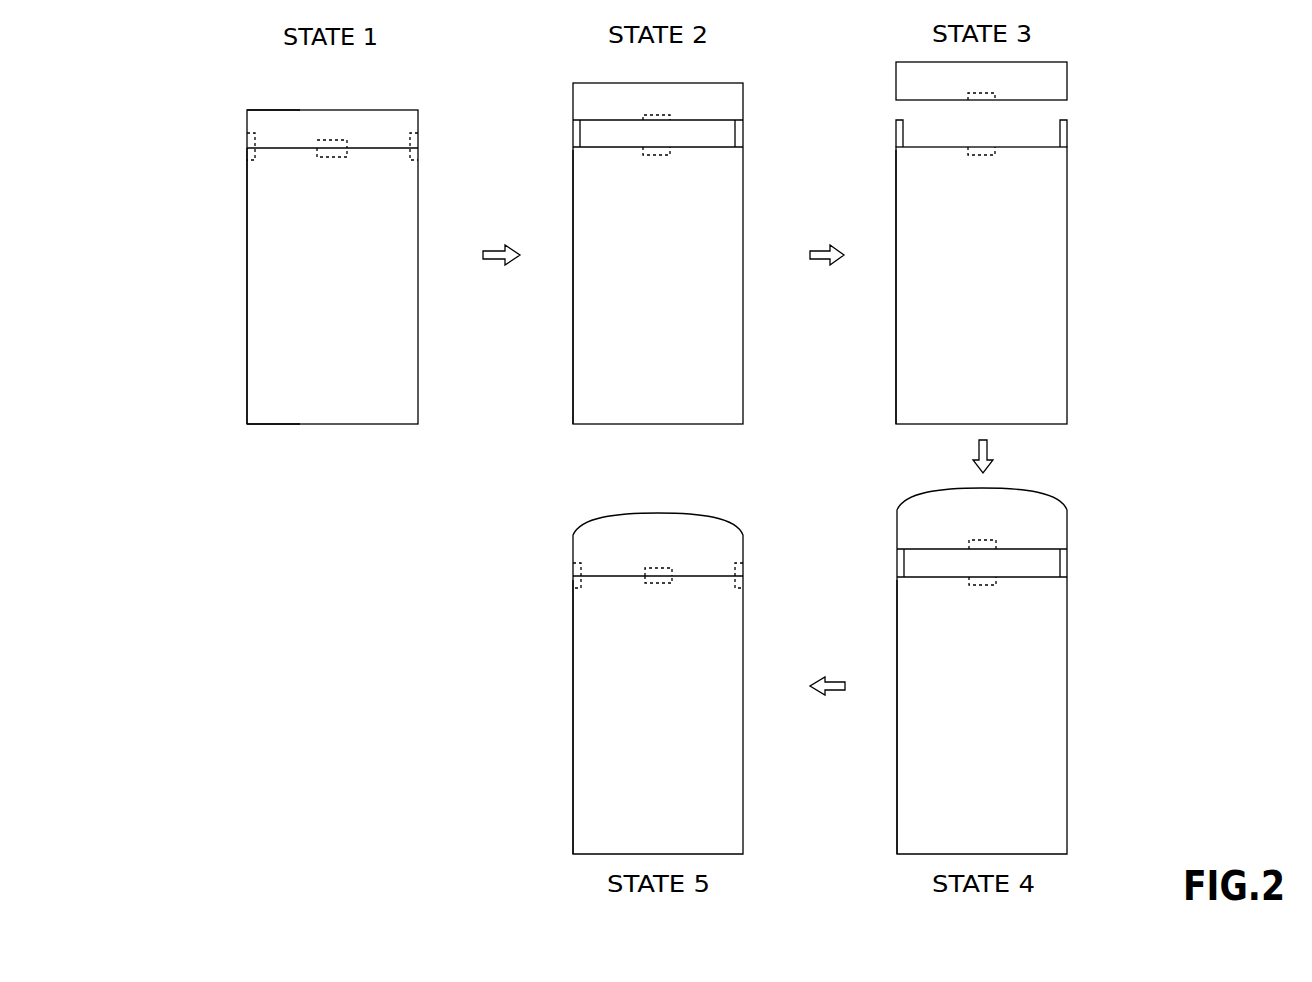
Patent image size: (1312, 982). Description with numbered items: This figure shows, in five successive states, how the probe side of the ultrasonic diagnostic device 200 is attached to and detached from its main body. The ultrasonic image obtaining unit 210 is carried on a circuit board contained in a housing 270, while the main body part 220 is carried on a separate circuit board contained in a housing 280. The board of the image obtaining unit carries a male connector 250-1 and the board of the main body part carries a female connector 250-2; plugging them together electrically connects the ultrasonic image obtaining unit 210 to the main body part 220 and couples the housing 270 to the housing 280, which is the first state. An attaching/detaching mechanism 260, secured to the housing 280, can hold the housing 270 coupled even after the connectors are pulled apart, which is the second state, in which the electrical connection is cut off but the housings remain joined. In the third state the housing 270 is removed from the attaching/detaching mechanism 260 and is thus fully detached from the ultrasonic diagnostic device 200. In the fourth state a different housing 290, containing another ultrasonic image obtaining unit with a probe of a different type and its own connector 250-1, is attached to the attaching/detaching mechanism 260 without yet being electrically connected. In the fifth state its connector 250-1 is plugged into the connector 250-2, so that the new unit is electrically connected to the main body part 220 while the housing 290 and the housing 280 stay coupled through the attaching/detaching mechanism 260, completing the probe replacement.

The ultrasonic diagnostic device 200 is at (409, 58).
The ultrasonic image obtaining unit 210 is at (418, 117).
The main body part 220 is at (407, 340).
The male connector 250-1 is at (340, 157).
The female connector 250-2 is at (338, 140).
The attaching/detaching mechanism 260 is at (255, 160).
The housing 270 is at (256, 104).
The housing 280 is at (256, 430).
The housing 290 is at (1067, 525).